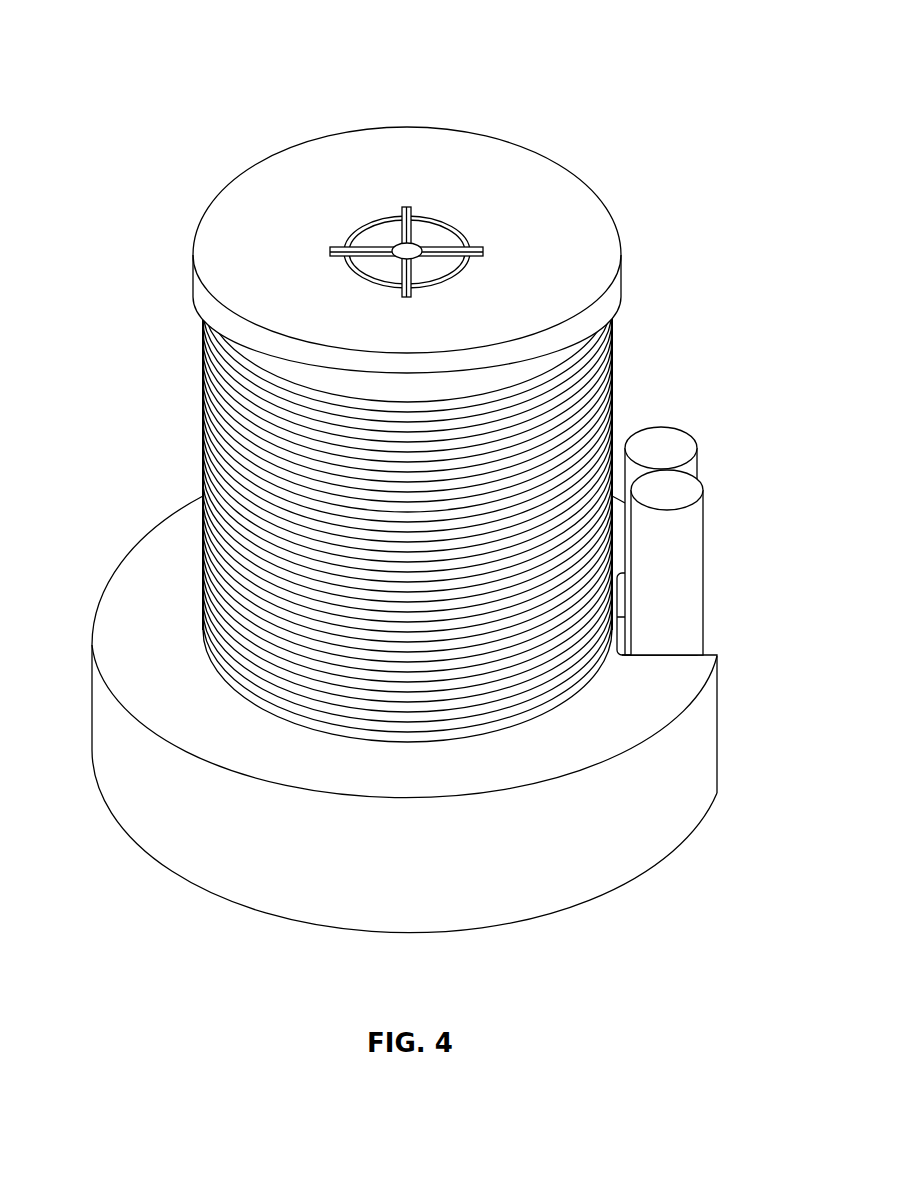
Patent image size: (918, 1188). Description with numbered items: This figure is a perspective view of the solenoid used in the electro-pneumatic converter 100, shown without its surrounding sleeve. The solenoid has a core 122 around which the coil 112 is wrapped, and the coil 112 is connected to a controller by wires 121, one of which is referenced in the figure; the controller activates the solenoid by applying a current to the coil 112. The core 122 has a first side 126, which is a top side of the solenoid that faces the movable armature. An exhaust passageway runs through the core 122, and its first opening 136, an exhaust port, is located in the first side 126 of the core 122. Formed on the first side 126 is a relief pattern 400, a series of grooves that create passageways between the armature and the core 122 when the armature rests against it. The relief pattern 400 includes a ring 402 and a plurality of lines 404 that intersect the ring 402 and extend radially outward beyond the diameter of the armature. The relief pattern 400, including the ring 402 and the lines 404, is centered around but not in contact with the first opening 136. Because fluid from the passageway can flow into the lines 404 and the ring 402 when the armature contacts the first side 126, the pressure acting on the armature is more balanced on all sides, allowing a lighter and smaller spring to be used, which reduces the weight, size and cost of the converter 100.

The converter 100 is at (422, 486).
The coil 112 is at (520, 702).
The wires 121 is at (687, 578).
The core 122 is at (432, 250).
The first side 126 is at (233, 257).
The first opening 136 is at (429, 262).
The relief pattern 400 is at (477, 228).
The ring 402 is at (353, 230).
The lines 404 is at (405, 207).